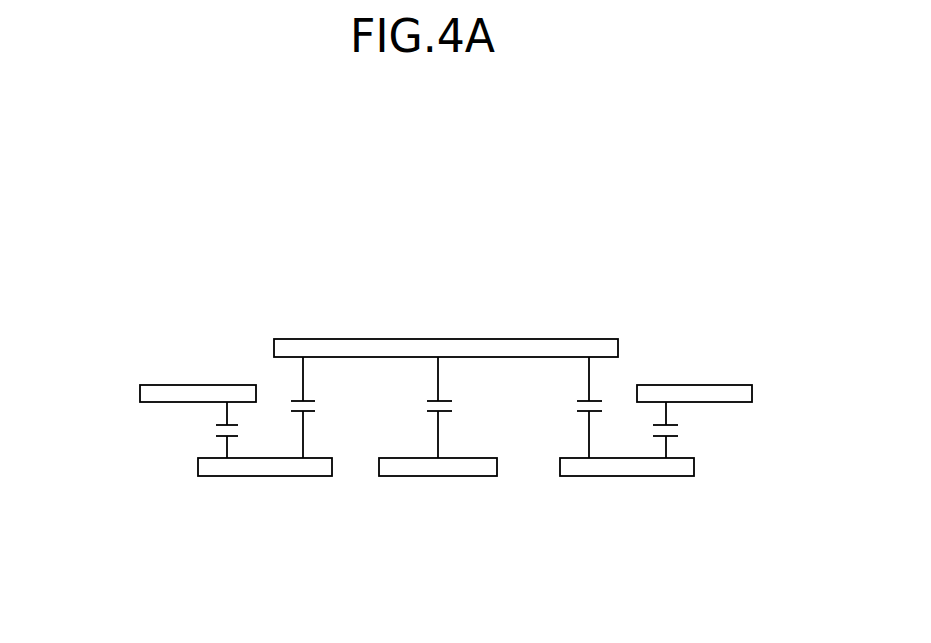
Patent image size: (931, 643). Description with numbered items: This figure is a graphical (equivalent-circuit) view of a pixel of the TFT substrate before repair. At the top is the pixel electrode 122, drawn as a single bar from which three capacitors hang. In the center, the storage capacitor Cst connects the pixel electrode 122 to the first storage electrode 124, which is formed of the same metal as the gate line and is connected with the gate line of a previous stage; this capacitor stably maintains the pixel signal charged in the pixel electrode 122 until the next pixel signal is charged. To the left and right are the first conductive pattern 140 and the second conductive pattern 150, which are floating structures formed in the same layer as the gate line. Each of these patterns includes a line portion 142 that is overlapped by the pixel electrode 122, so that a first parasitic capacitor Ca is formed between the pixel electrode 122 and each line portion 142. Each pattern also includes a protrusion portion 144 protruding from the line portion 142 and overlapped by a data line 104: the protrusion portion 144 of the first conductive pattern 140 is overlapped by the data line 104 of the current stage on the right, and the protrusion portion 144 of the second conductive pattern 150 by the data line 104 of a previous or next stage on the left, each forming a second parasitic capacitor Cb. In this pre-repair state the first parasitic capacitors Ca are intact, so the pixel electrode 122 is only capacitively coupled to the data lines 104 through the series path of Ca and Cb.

The pixel electrode 122 is at (274, 347).
The data line 104 is at (142, 392).
The first storage electrode 124 is at (440, 476).
The line portion 142 is at (305, 476).
The protrusion portion 144 is at (229, 476).
The second conductive pattern 150 is at (308, 548).
The first conductive pattern 140 is at (670, 550).
The first parasitic capacitor Ca is at (464, 407).
The second parasitic capacitor Cb is at (448, 430).
The storage capacitor Cst is at (418, 407).